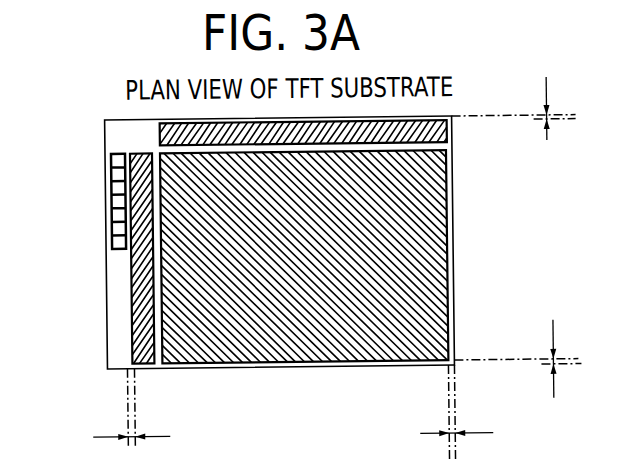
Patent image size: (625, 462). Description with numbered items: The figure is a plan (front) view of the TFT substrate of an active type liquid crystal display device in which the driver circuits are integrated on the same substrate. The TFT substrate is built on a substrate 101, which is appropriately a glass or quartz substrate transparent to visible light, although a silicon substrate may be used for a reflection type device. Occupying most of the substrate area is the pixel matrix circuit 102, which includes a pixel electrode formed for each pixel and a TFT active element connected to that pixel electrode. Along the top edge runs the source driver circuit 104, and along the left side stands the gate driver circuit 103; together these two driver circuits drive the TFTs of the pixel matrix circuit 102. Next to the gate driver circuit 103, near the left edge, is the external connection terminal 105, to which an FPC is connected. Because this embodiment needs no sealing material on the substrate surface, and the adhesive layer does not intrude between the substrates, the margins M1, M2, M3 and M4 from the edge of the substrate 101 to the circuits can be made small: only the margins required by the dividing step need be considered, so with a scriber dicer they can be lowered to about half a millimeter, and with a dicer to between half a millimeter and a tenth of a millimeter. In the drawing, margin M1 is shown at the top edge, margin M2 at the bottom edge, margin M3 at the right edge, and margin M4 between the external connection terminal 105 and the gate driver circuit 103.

The substrate 101 is at (107, 318).
The pixel matrix circuit 102 is at (432, 235).
The gate driver circuit 103 is at (132, 265).
The source driver circuit 104 is at (448, 138).
The external connection terminal 105 is at (119, 181).
The margin M1 is at (521, 107).
The margin M2 is at (523, 354).
The margin M3 is at (458, 413).
The margin M4 is at (120, 408).